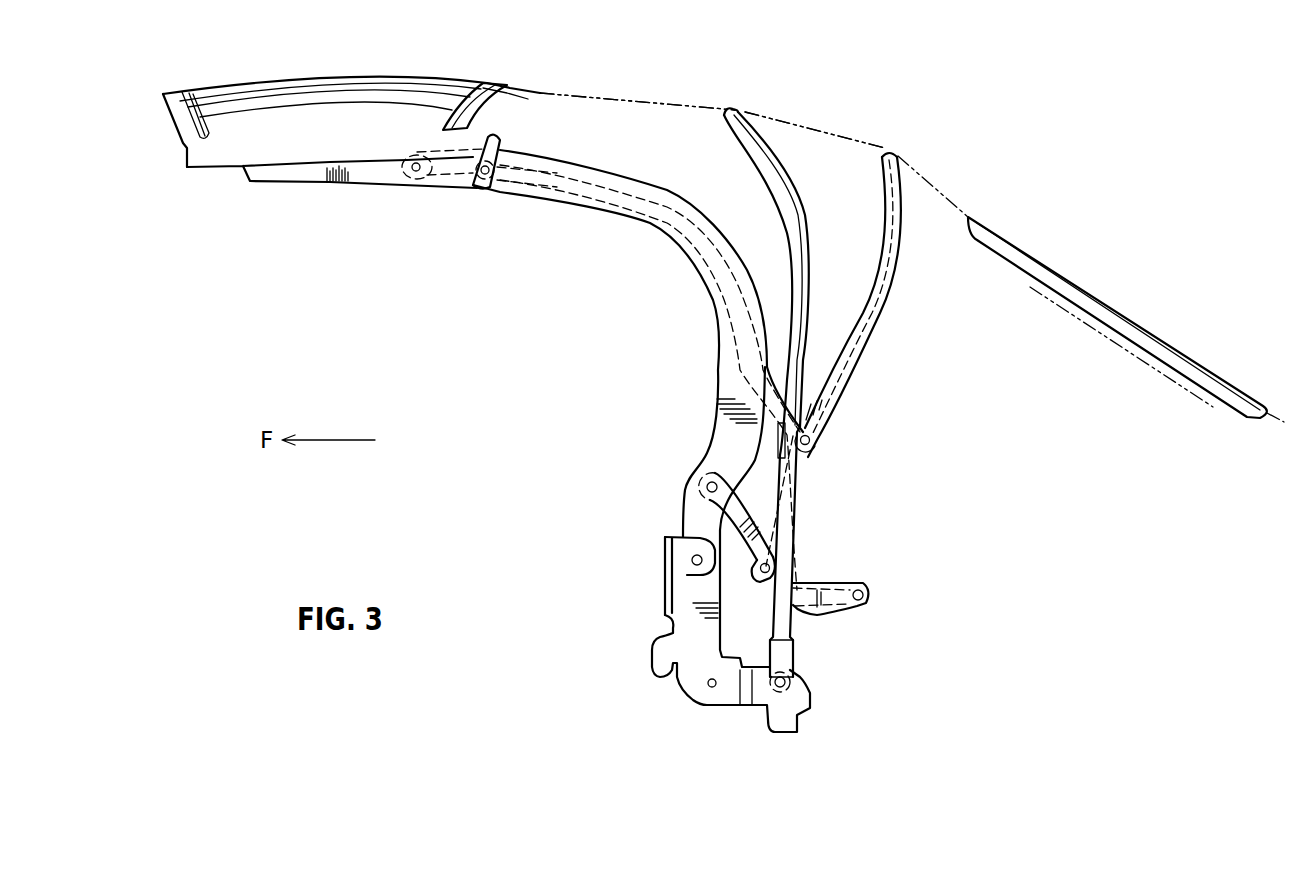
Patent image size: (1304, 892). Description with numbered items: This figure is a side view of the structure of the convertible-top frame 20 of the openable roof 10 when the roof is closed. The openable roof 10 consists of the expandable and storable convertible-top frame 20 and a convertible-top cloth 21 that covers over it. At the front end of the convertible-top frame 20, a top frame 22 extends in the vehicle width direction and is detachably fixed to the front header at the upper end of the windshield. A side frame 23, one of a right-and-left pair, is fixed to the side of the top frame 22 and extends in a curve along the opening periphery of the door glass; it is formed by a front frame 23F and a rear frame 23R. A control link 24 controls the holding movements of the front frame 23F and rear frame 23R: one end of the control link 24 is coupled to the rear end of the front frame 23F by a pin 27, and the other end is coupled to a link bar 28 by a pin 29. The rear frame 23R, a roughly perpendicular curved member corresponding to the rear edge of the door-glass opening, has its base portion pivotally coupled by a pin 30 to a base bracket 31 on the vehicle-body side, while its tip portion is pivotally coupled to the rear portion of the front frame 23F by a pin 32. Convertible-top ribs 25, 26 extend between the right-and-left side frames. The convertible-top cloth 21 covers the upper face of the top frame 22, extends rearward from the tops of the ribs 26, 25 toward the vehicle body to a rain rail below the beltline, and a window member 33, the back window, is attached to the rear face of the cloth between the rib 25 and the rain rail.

The openable roof 10 is at (623, 78).
The convertible-top frame 20 is at (360, 149).
The convertible-top cloth 21 is at (841, 128).
The top frame 22 is at (250, 87).
The side frame 23 is at (372, 221).
The front frame 23F is at (358, 176).
The rear frame 23R is at (498, 186).
The control link 24 is at (716, 251).
The convertible-top rib 25 is at (896, 282).
The convertible-top rib 26 is at (806, 235).
The pin 27 is at (490, 170).
The link bar 28 is at (829, 618).
The pin 29 is at (761, 576).
The pin 30 is at (690, 560).
The base bracket 31 is at (677, 640).
The pin 32 is at (423, 157).
The window member 33 is at (1112, 297).